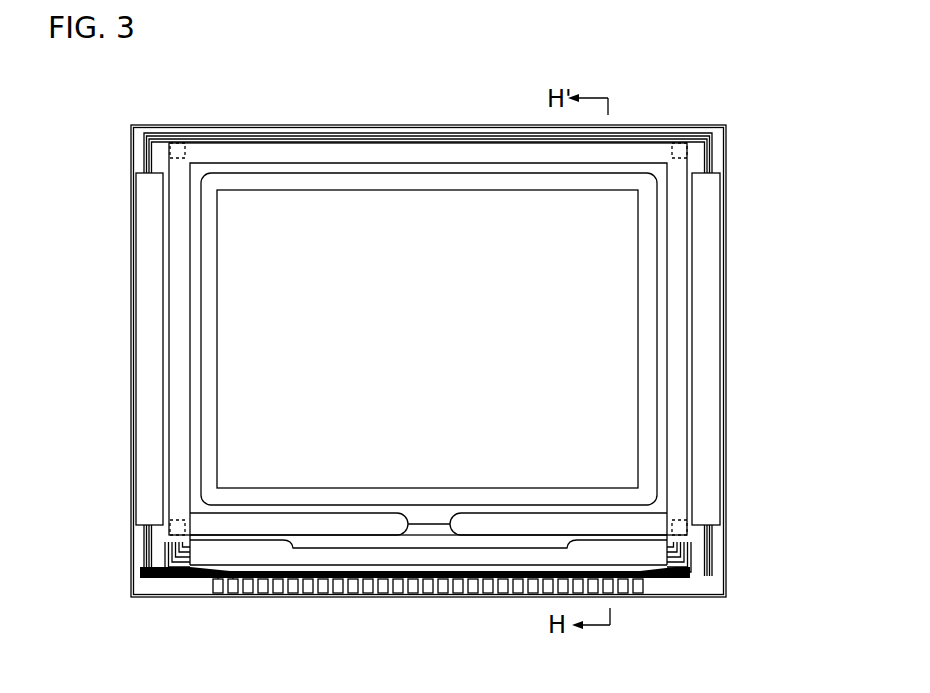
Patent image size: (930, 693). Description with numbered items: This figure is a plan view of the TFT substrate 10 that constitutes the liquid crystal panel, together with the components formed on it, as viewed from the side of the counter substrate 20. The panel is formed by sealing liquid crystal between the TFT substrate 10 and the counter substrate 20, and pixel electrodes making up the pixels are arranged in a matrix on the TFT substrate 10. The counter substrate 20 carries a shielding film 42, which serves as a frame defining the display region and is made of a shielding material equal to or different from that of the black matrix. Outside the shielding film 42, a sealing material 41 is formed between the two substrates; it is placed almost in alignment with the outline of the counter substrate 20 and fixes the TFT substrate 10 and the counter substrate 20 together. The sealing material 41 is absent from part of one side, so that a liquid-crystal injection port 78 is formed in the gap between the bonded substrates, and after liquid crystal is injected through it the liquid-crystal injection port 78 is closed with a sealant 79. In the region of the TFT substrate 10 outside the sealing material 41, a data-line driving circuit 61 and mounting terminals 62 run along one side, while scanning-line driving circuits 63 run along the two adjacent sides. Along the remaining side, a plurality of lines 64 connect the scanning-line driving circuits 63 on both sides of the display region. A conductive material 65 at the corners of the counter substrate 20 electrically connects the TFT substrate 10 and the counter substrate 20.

The TFT substrate 10 is at (243, 125).
The counter substrate 20 is at (338, 142).
The sealing material 41 is at (683, 268).
The shielding film 42 is at (215, 278).
The data-line driving circuit 61 is at (205, 553).
The mounting terminals 62 is at (364, 583).
The scanning-line driving circuits 63 is at (142, 405).
The lines 64 is at (443, 128).
The conductive material 65 is at (170, 150).
The liquid-crystal injection port 78 is at (428, 527).
The sealant 79 is at (470, 540).